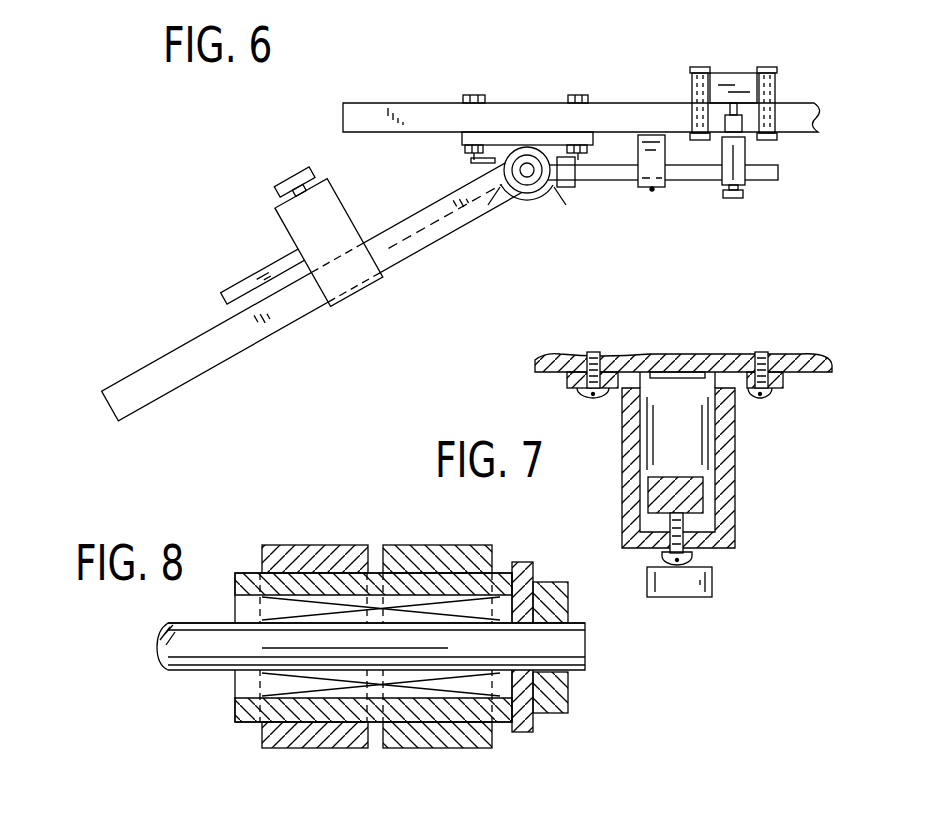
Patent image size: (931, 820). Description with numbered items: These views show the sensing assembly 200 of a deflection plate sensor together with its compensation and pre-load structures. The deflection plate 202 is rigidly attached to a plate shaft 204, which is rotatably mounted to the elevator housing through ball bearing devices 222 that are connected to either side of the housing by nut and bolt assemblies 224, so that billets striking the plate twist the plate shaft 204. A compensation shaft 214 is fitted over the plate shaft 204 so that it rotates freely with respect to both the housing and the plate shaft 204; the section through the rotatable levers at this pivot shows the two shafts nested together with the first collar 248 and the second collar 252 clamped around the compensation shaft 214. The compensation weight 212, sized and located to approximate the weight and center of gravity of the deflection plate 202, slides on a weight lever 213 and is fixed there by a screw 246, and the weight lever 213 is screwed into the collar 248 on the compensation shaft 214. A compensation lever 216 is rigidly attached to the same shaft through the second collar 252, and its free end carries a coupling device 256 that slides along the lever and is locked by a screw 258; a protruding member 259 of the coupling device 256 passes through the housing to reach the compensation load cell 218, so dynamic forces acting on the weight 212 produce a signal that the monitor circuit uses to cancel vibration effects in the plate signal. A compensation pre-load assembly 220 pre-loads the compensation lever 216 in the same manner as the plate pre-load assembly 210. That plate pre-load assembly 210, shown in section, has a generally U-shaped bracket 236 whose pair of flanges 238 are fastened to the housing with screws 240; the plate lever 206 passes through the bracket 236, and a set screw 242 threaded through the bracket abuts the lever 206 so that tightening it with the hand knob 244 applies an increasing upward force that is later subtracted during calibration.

In FIG. 6, the sensing assembly 200 is at (90, 233).
In FIG. 6, the deflection plate 202 is at (214, 366).
In FIG. 8, the plate shaft 204 is at (185, 672).
In FIG. 7, the plate lever 206 is at (703, 483).
In FIG. 7, the plate pre-load assembly 210 is at (815, 526).
In FIG. 6, the compensation weight 212 is at (340, 200).
In FIG. 6, the weight lever 213 is at (236, 290).
In FIG. 6, the compensation shaft 214 is at (543, 192).
In FIG. 8, the compensation shaft 214 is at (500, 727).
In FIG. 6, the compensation lever 216 is at (758, 250).
In FIG. 6, the compensation load cell 218 is at (738, 73).
In FIG. 6, the compensation pre-load assembly 220 is at (698, 250).
In FIG. 6, the ball bearing devices 222 is at (462, 139).
In FIG. 6, the nut and bolt assemblies 224 is at (572, 95).
In FIG. 7, the U-shaped bracket 236 is at (735, 492).
In FIG. 7, the flanges 238 is at (567, 380).
In FIG. 7, the screws 240 is at (600, 398).
In FIG. 7, the set screw 242 is at (695, 558).
In FIG. 7, the hand knob 244 is at (712, 585).
In FIG. 6, the screw 246 is at (296, 173).
In FIG. 6, the collar 248 is at (524, 200).
In FIG. 8, the collar 248 is at (460, 748).
In FIG. 8, the second collar 252 is at (327, 748).
In FIG. 6, the coupling device 256 is at (838, 192).
In FIG. 6, the screw 258 is at (787, 228).
In FIG. 6, the protruding member 259 is at (818, 158).